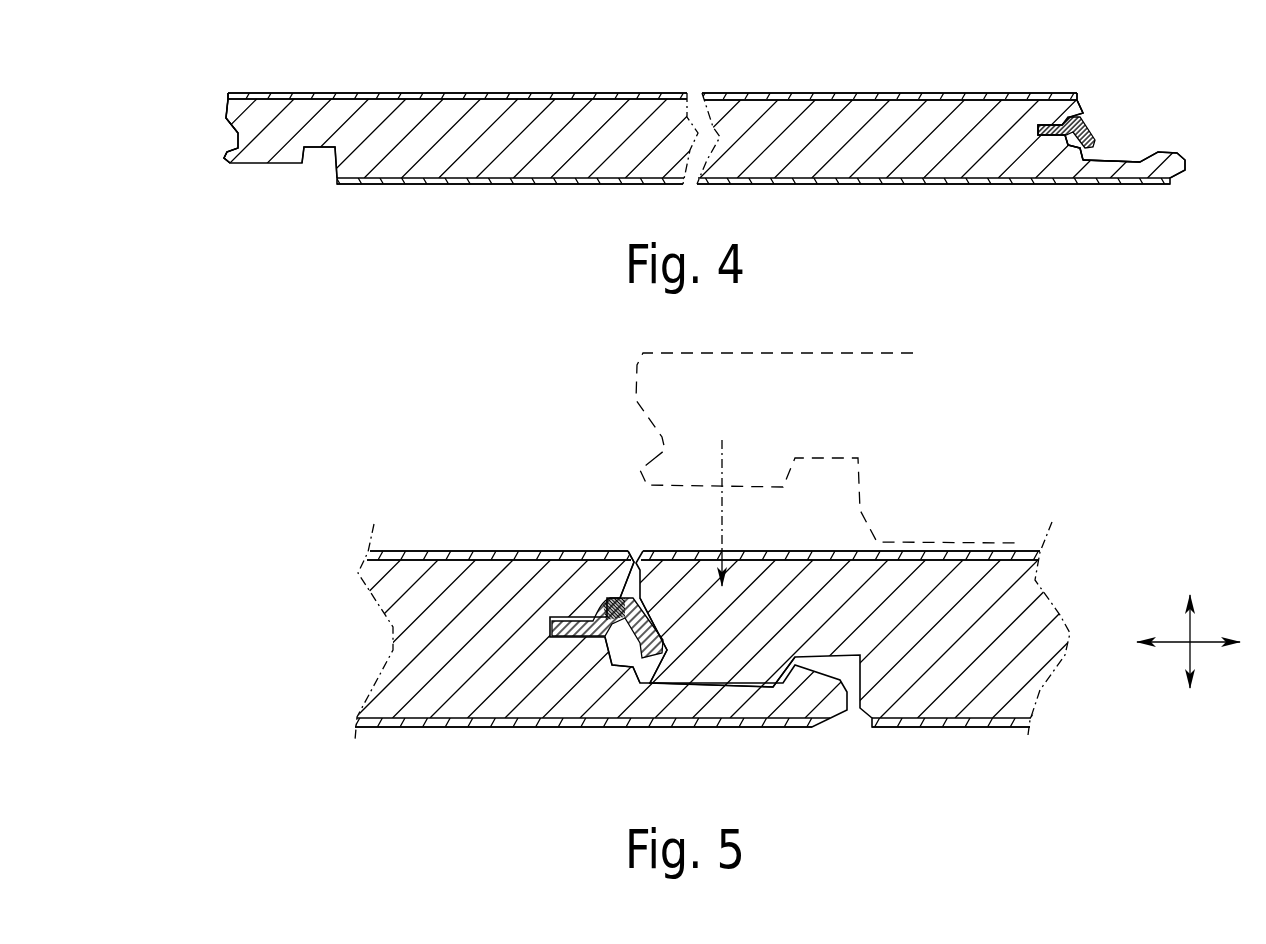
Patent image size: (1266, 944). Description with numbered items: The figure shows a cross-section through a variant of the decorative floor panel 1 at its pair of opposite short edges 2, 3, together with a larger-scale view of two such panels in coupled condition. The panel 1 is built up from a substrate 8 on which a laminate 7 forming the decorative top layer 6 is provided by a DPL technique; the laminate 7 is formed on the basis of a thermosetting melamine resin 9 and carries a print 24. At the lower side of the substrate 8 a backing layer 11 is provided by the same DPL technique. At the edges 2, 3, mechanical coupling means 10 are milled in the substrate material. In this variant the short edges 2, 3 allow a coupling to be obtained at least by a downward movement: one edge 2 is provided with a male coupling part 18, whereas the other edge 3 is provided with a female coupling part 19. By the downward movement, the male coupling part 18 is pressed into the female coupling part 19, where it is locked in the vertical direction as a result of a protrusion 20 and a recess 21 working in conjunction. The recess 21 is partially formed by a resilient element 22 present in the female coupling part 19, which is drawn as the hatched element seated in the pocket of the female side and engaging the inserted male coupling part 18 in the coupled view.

In FIG. 4, the floor panel 1 is at (670, 133).
In FIG. 5, the floor panel 1 is at (732, 558).
In FIG. 4, the short edge 2 is at (198, 142).
In FIG. 4, the short edge 3 is at (1145, 122).
In FIG. 4, the decorative top layer 6 is at (255, 95).
In FIG. 5, the decorative top layer 6 is at (452, 557).
In FIG. 4, the laminate 7 is at (403, 96).
In FIG. 5, the laminate 7 is at (413, 558).
In FIG. 4, the substrate 8 is at (488, 150).
In FIG. 5, the substrate 8 is at (420, 642).
In FIG. 4, the melamine resin 9 is at (495, 96).
In FIG. 5, the melamine resin 9 is at (535, 557).
In FIG. 4, the mechanical coupling means 10 is at (276, 173).
In FIG. 4, the backing layer 11 is at (733, 182).
In FIG. 5, the backing layer 11 is at (395, 722).
In FIG. 4, the male coupling part 18 is at (229, 108).
In FIG. 5, the male coupling part 18 is at (725, 640).
In FIG. 4, the female coupling part 19 is at (1128, 157).
In FIG. 4, the protrusion 20 is at (233, 158).
In FIG. 5, the protrusion 20 is at (650, 471).
In FIG. 4, the recess 21 is at (1088, 155).
In FIG. 5, the recess 21 is at (642, 663).
In FIG. 4, the resilient element 22 is at (1072, 137).
In FIG. 5, the resilient element 22 is at (623, 600).
In FIG. 4, the print 24 is at (229, 96).
In FIG. 5, the print 24 is at (640, 362).